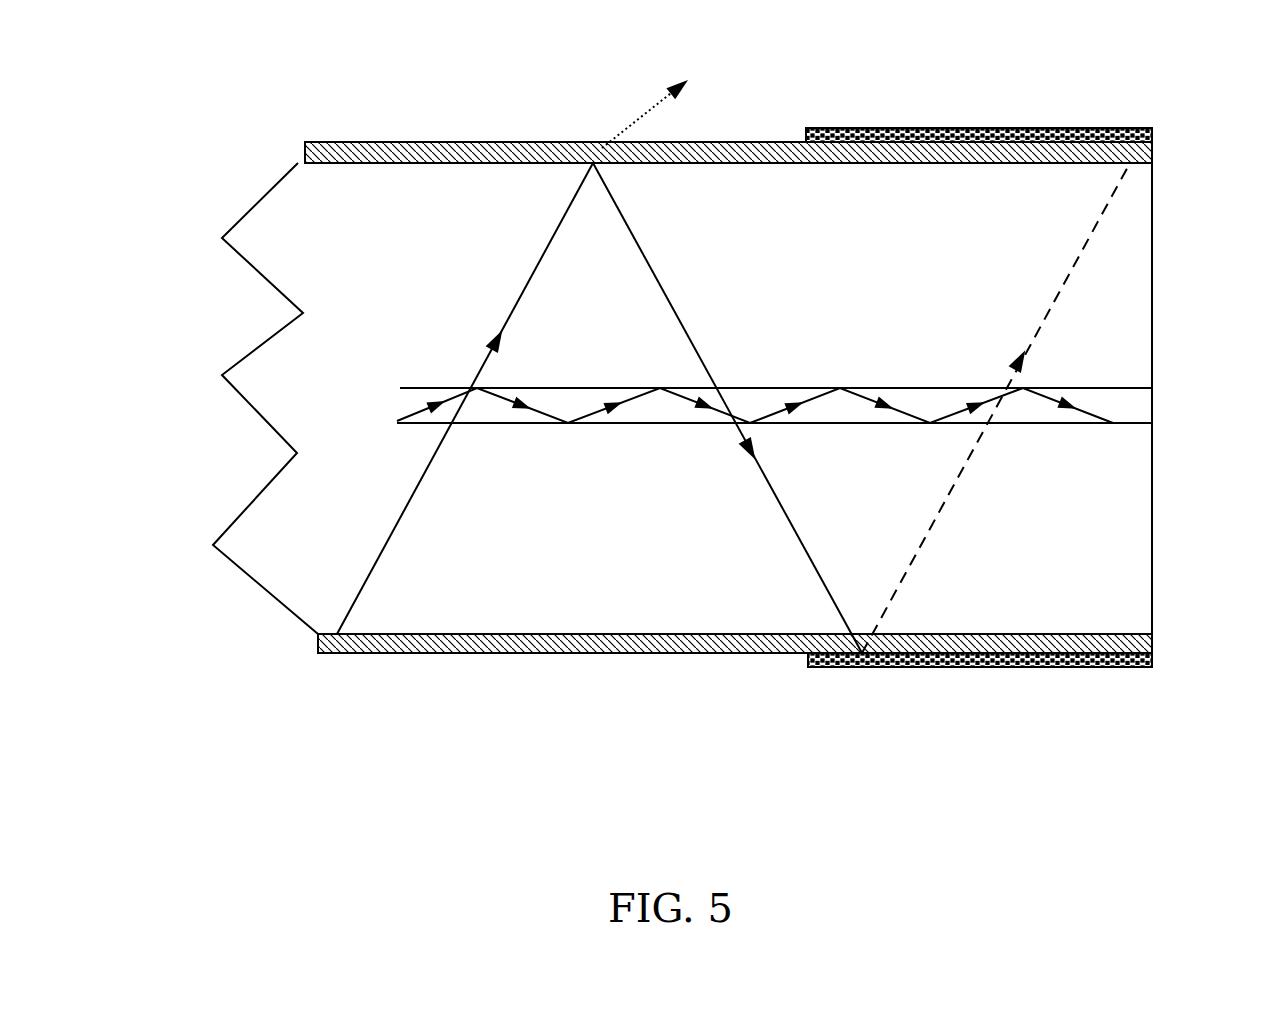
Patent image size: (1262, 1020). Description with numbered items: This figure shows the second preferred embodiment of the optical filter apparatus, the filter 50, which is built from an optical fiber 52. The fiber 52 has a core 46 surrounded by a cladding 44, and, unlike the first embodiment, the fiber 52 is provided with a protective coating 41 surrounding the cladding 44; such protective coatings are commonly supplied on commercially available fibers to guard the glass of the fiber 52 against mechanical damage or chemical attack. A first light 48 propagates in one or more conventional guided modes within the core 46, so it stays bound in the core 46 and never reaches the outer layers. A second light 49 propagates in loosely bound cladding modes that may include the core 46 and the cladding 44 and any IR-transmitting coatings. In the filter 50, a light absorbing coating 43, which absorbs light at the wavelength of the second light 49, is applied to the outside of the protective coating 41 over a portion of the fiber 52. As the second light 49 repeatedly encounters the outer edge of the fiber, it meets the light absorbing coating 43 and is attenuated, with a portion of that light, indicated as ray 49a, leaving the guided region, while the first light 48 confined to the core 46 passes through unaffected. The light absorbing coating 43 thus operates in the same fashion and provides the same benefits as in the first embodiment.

The protective coating 41 is at (480, 143).
The light absorbing coating 43 is at (1086, 128).
The cladding 44 is at (883, 265).
The core 46 is at (1133, 405).
The first light 48 is at (400, 415).
The second light 49 is at (550, 235).
The out-coupled light ray 49a is at (632, 127).
The filter 50 is at (345, 61).
The fiber 52 is at (272, 130).